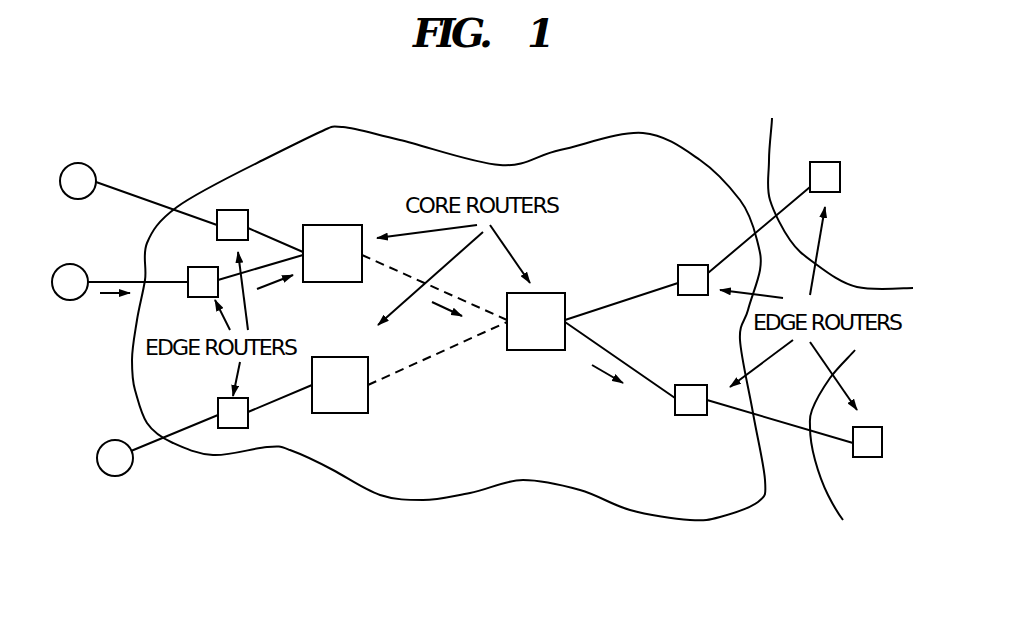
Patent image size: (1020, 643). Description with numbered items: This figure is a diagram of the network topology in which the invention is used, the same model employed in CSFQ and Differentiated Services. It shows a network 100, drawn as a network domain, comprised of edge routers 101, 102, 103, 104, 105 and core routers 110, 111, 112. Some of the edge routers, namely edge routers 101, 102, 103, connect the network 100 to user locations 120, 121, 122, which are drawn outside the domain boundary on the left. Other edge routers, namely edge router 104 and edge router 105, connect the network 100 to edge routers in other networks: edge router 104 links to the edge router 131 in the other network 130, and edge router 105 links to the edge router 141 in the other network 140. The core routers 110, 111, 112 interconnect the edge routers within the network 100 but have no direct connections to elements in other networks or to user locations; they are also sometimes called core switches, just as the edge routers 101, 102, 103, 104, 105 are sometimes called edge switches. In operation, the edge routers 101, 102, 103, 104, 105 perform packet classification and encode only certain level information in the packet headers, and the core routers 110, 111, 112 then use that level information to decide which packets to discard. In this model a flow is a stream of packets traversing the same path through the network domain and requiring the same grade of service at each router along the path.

The network 100 is at (445, 153).
The edge router 101 is at (232, 210).
The edge router 102 is at (196, 267).
The edge router 103 is at (218, 401).
The edge router 104 is at (690, 265).
The edge router 105 is at (690, 415).
The core router 110 is at (368, 407).
The core router 111 is at (340, 225).
The core router 112 is at (545, 293).
The user location 120 is at (91, 166).
The user location 121 is at (68, 300).
The user location 122 is at (105, 473).
The other network 130 is at (767, 145).
The edge router 131 is at (826, 162).
The other network 140 is at (832, 510).
The edge router 141 is at (872, 458).